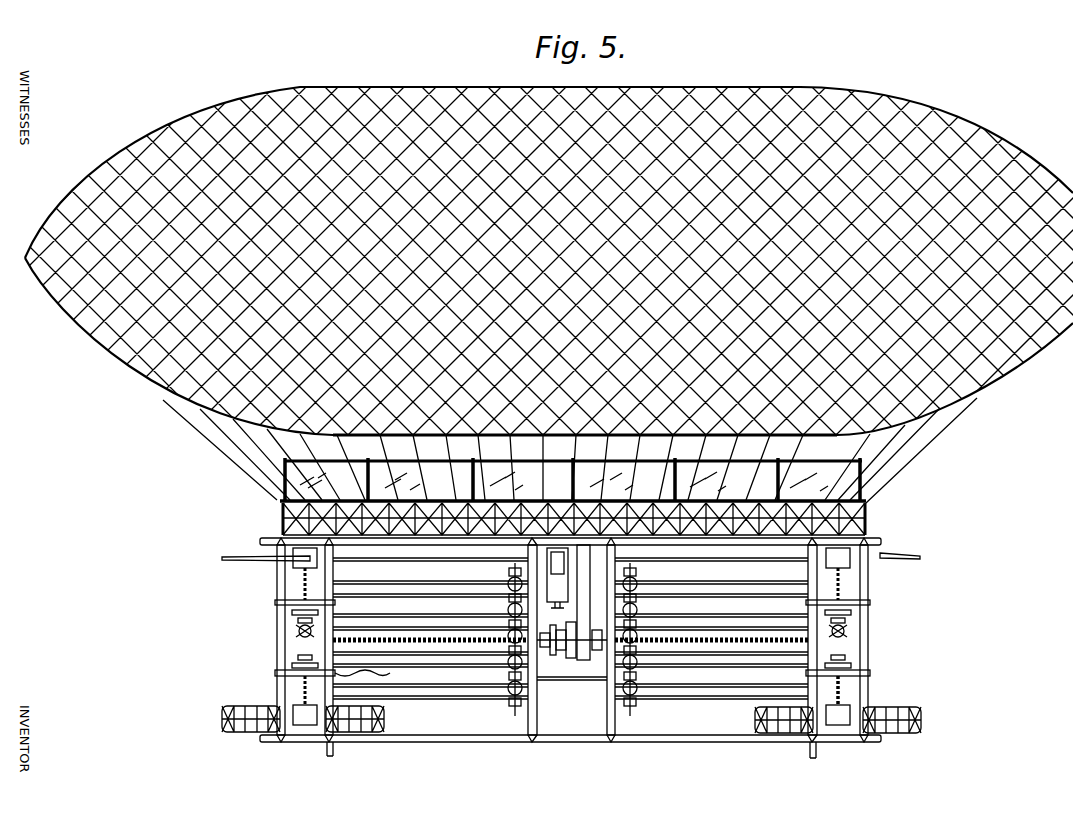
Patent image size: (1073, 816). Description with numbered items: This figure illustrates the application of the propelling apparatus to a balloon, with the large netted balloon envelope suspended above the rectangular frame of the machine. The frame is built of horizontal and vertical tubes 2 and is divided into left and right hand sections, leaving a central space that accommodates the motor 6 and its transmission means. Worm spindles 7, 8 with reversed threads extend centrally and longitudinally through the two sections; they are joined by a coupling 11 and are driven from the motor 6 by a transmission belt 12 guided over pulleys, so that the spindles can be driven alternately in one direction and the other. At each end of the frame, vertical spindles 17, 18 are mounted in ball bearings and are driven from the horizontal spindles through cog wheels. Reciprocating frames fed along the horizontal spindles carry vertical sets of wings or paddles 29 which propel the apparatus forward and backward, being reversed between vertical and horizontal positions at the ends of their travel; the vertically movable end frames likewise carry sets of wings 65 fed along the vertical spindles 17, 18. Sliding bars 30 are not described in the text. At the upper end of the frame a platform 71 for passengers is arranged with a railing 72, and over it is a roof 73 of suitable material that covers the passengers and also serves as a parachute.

The vertical tubes 2 is at (282, 618).
The motor 6 is at (557, 578).
The worm spindle 7 is at (448, 642).
The worm spindle 8 is at (725, 641).
The coupling 11 is at (560, 657).
The transmission belt 12 is at (580, 592).
The vertical spindle 17 is at (303, 588).
The vertical spindle 18 is at (842, 690).
The wings or paddles 29 is at (640, 578).
The flexible connection 30 is at (370, 673).
The wings 65 is at (253, 558).
The platform 71 is at (840, 528).
The railing 72 is at (863, 509).
The roof 73 is at (843, 476).